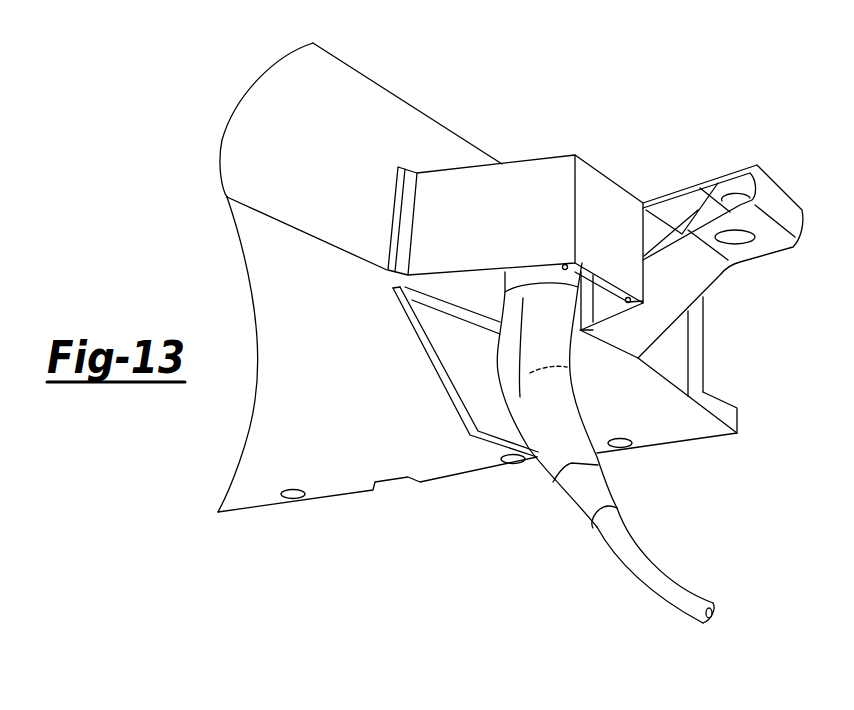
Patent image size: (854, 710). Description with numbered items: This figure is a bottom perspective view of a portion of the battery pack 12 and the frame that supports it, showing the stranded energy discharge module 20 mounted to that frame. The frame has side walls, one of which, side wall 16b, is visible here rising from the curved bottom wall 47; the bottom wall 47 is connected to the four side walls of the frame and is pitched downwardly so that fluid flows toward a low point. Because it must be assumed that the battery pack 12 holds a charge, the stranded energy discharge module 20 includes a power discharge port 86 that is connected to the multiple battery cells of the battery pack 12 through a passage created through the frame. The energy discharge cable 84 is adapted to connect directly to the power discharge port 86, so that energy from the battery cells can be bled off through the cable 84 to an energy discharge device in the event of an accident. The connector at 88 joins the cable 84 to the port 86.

The battery pack 12 is at (430, 266).
The side wall 16b is at (352, 103).
The stranded energy discharge module 20 is at (630, 162).
The bottom wall 47 is at (253, 227).
The energy discharge cable 84 is at (647, 575).
The power discharge port 86 is at (547, 192).
The connector plug 88 is at (553, 343).